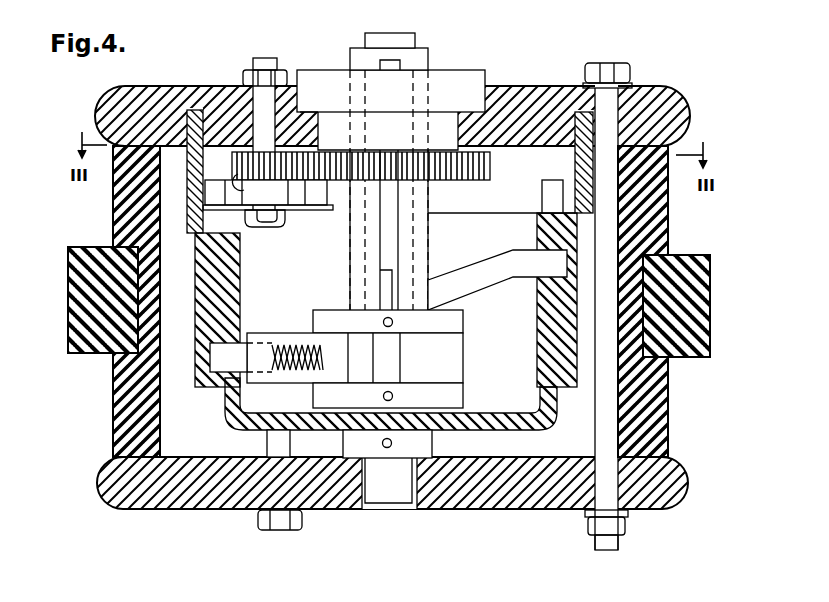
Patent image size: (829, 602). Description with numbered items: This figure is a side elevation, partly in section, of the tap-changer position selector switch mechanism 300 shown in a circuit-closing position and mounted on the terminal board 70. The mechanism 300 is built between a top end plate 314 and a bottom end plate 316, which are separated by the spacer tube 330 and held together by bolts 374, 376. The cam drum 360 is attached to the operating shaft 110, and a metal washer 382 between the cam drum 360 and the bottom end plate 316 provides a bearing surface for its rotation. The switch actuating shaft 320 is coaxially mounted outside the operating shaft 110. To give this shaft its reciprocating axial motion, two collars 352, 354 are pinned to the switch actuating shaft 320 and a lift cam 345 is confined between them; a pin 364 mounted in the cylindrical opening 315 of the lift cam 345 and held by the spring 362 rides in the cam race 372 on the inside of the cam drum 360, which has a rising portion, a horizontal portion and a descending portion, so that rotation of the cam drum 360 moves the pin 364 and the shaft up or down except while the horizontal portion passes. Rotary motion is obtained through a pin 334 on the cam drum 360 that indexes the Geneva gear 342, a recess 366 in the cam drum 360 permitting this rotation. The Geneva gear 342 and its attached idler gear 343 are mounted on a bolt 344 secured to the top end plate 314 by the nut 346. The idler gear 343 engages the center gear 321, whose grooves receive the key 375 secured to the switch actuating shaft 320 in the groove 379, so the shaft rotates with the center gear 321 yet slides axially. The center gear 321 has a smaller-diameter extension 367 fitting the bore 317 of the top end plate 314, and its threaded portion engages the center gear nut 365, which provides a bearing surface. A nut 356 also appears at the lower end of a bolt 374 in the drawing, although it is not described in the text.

The terminal board 70 is at (68, 302).
The operating shaft 110 is at (415, 47).
The mechanism 300 is at (556, 547).
The top end plate 314 is at (683, 106).
The cylindrical opening 315 is at (250, 378).
The bottom end plate 316 is at (97, 478).
The bore 317 is at (320, 118).
The switch actuating shaft 320 is at (348, 268).
The center gear 321 is at (490, 166).
The spacer tube 330 is at (668, 420).
The pin 334 is at (541, 201).
The Geneva gear 342 is at (273, 218).
The idler gear 343 is at (240, 191).
The bolt 344 is at (260, 225).
The lift cam 345 is at (465, 364).
The nut 346 is at (258, 75).
The collar 352 is at (465, 326).
The collar 354 is at (465, 399).
The nut 356 is at (625, 532).
The cam drum 360 is at (240, 417).
The spring 362 is at (268, 341).
The pin 364 is at (212, 333).
The center gear nut 365 is at (487, 84).
The recess 366 is at (578, 186).
The extension 367 is at (443, 122).
The cam race 372 is at (452, 271).
The bolt 374 is at (594, 443).
The key 375 is at (392, 202).
The bolt 376 is at (267, 444).
The groove 379 is at (385, 290).
The metal washer 382 is at (432, 458).